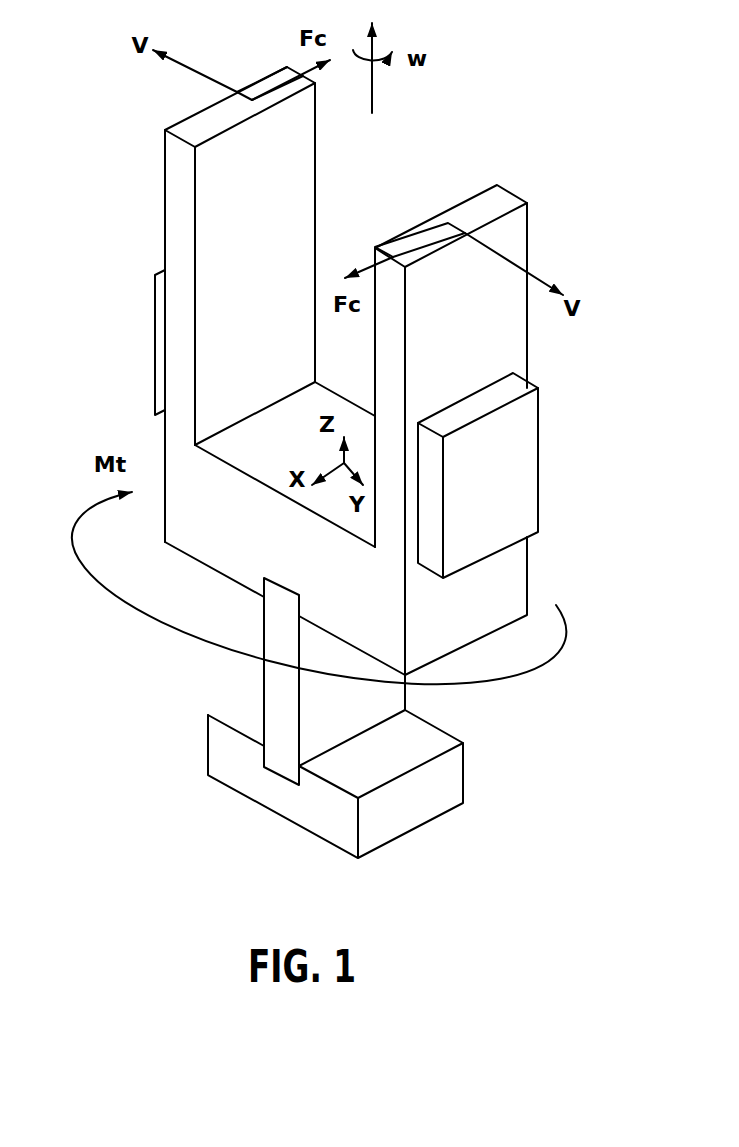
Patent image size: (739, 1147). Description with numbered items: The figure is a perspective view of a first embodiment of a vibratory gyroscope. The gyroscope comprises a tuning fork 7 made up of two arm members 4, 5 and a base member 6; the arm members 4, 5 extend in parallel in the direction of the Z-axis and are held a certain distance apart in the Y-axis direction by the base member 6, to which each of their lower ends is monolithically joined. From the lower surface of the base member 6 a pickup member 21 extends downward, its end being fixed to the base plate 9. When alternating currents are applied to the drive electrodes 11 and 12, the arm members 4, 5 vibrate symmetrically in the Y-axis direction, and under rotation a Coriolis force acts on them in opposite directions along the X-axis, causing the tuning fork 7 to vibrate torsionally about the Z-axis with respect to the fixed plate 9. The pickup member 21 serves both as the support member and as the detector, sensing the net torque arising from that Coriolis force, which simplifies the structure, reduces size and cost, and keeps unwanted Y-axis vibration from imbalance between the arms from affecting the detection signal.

The arm member 4 is at (478, 345).
The arm member 5 is at (182, 203).
The base member 6 is at (253, 564).
The tuning fork 7 is at (305, 154).
The base plate 9 is at (437, 785).
The drive electrode 11 is at (493, 448).
The drive electrode 12 is at (155, 375).
The pickup member 21 is at (265, 712).